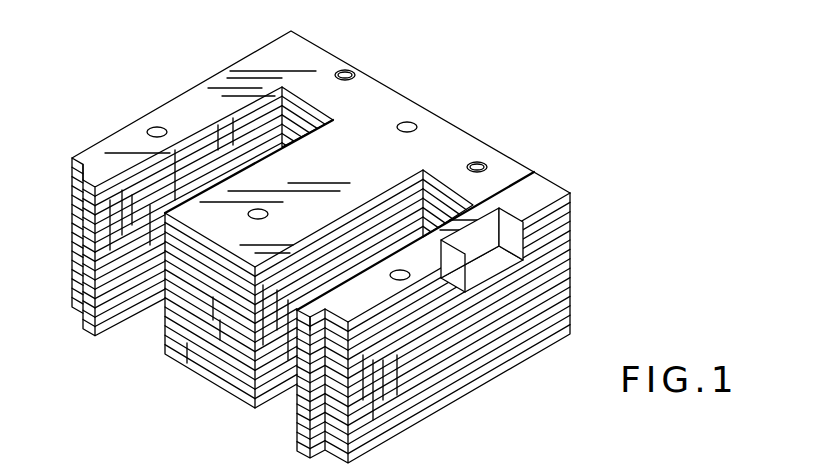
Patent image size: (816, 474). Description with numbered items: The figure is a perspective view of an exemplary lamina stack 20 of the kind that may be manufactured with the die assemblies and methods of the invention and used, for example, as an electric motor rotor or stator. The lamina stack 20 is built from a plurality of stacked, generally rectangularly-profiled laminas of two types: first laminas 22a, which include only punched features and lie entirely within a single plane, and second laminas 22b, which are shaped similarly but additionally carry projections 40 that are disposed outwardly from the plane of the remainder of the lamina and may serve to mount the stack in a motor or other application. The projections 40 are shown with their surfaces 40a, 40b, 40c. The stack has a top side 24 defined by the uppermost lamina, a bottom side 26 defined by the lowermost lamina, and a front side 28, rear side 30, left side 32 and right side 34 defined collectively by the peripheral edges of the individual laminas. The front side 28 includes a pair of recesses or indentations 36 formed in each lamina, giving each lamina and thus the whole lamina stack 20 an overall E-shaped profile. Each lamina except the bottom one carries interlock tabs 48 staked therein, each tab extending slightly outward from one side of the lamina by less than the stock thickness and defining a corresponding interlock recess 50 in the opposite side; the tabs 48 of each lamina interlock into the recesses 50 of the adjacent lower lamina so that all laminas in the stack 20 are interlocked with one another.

The lamina stack 20 is at (490, 44).
The first laminas 22a is at (574, 220).
The second laminas 22b is at (574, 242).
The top side 24 is at (356, 130).
The bottom side 26 is at (240, 409).
The front side 28 is at (196, 324).
The rear side 30 is at (548, 160).
The left side 32 is at (172, 92).
The right side 34 is at (422, 404).
The recesses or indentations 36 is at (146, 308).
The projections 40 is at (516, 302).
The slot bottom wall 40a is at (505, 346).
The slot side wall 40b is at (526, 334).
The slot side wall 40c is at (541, 325).
The interlock tabs 48 is at (340, 70).
The interlock recess 50 is at (338, 76).